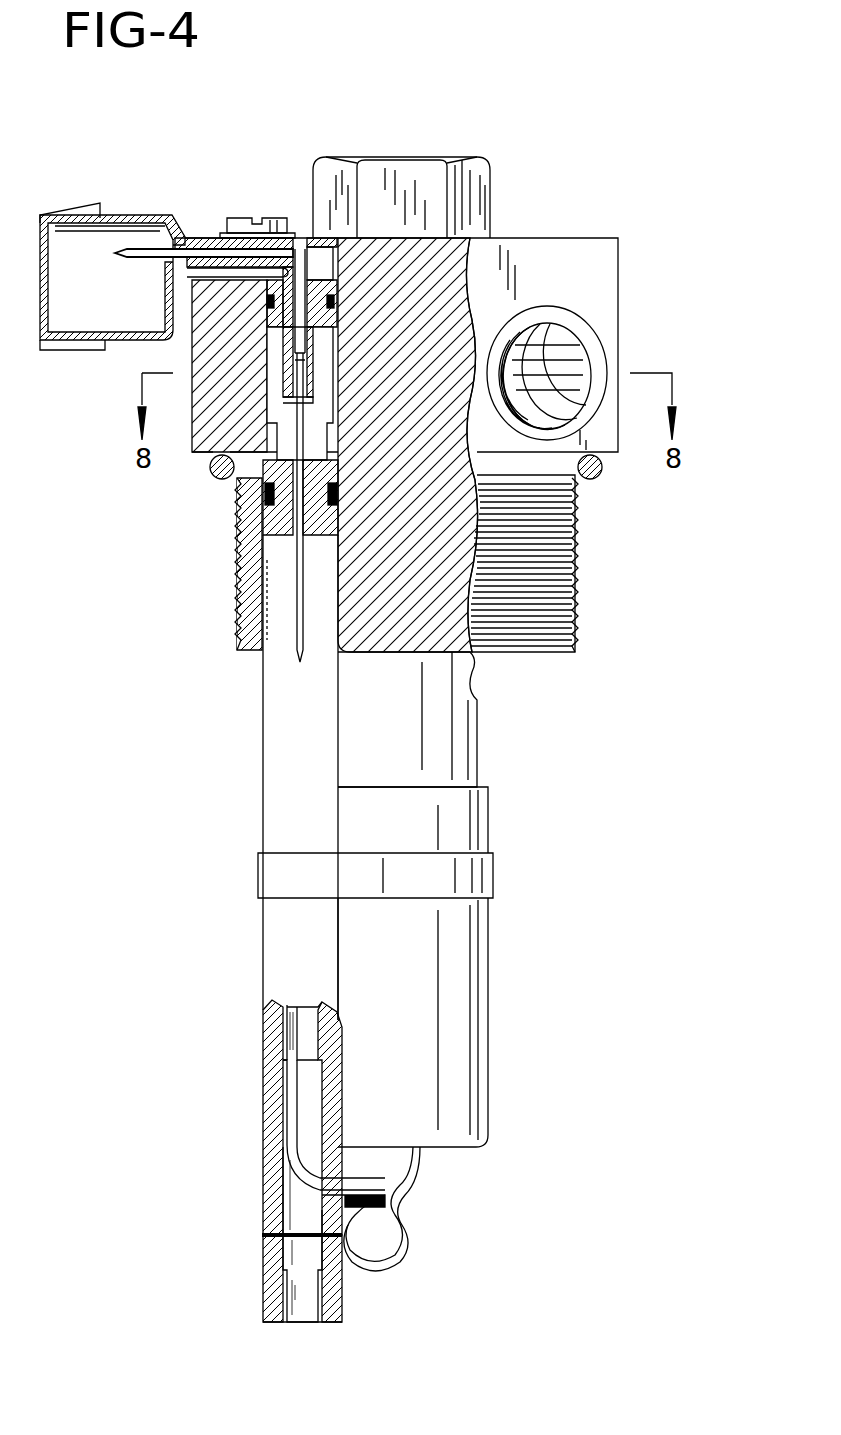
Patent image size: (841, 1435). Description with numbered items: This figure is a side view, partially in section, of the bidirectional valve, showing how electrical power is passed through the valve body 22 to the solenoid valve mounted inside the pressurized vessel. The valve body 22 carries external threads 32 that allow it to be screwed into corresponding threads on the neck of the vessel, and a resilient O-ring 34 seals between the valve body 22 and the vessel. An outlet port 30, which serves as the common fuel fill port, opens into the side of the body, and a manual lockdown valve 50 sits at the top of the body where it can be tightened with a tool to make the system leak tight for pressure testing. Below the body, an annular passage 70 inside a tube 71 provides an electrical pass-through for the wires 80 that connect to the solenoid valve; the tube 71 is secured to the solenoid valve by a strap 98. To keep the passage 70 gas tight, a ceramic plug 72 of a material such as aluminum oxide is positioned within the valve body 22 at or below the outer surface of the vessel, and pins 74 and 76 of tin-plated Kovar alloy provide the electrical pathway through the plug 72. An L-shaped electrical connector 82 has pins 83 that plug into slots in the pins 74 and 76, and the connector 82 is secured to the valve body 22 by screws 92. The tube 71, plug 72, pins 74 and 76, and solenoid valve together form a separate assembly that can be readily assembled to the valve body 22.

The valve body 22 is at (610, 265).
The outlet port 30 is at (565, 358).
The external threads 32 is at (575, 603).
The O-ring 34 is at (600, 478).
The manual lockdown valve 50 is at (500, 180).
The annular passage 70 is at (272, 1038).
The tube 71 is at (265, 1262).
The plug 72 is at (272, 540).
The pin 74 is at (298, 580).
The pin 76 is at (303, 418).
The wires 80 is at (428, 1193).
The L-shaped electrical connector 82 is at (125, 214).
The pins 83 is at (150, 260).
The screws 92 is at (245, 216).
The strap 98 is at (263, 884).